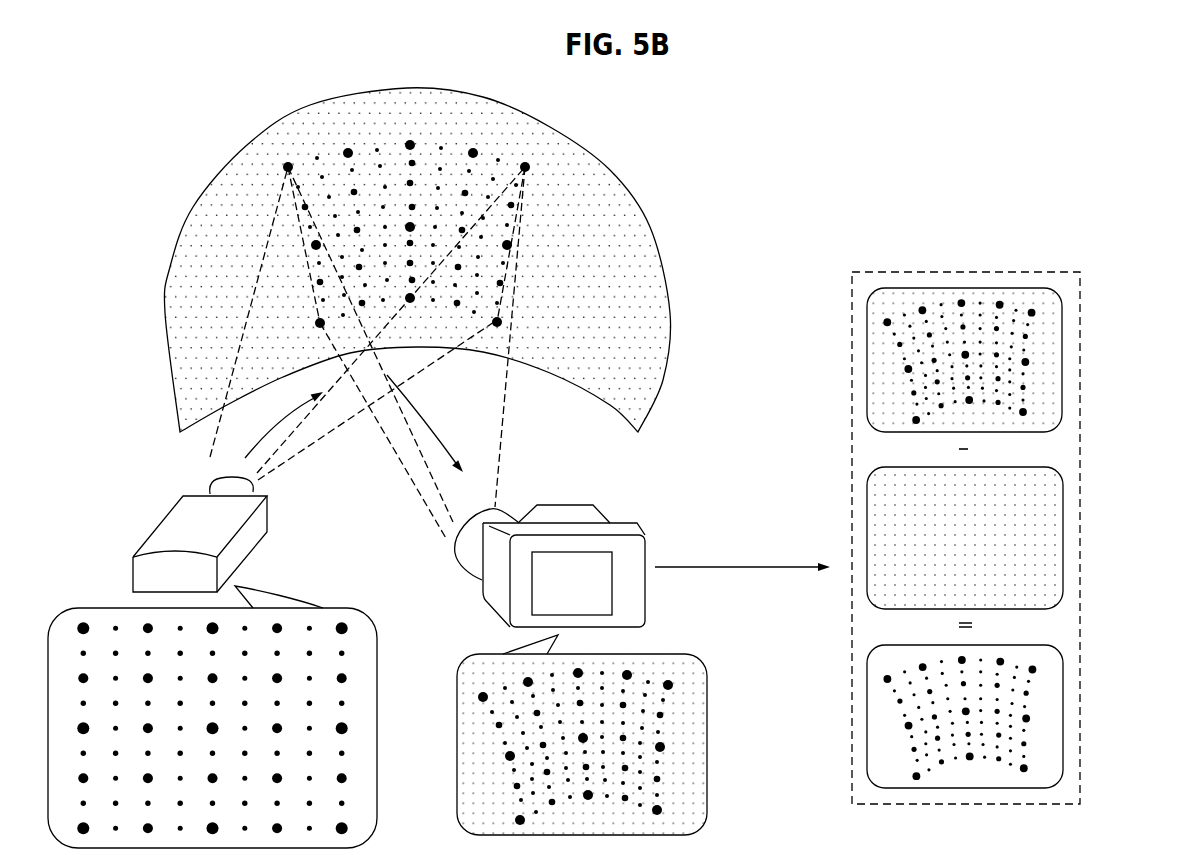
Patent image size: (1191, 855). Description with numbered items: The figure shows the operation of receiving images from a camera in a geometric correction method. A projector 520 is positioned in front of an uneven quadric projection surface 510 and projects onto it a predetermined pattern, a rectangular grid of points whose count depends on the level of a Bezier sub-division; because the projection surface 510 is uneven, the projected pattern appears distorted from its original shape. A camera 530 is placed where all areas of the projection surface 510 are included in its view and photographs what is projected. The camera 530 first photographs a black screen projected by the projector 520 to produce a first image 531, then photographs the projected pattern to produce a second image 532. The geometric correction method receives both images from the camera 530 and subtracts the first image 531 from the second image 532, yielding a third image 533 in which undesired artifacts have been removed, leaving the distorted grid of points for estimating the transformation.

The projection surface 510 is at (637, 193).
The projector 520 is at (160, 530).
The camera 530 is at (616, 523).
The first image 531 is at (1063, 537).
The second image 532 is at (1062, 357).
The third image 533 is at (1063, 715).